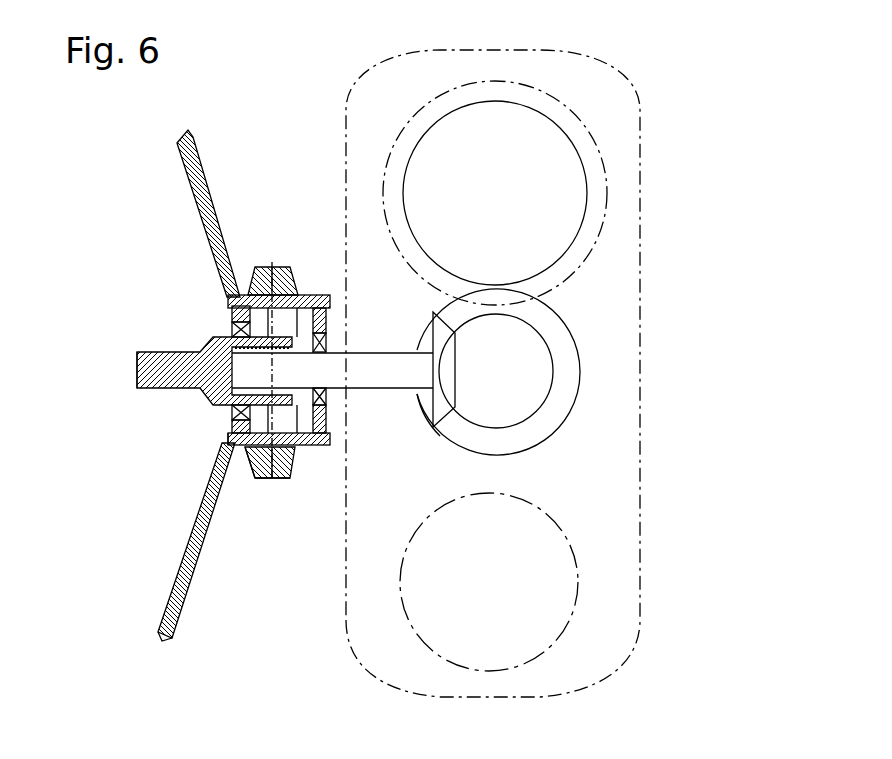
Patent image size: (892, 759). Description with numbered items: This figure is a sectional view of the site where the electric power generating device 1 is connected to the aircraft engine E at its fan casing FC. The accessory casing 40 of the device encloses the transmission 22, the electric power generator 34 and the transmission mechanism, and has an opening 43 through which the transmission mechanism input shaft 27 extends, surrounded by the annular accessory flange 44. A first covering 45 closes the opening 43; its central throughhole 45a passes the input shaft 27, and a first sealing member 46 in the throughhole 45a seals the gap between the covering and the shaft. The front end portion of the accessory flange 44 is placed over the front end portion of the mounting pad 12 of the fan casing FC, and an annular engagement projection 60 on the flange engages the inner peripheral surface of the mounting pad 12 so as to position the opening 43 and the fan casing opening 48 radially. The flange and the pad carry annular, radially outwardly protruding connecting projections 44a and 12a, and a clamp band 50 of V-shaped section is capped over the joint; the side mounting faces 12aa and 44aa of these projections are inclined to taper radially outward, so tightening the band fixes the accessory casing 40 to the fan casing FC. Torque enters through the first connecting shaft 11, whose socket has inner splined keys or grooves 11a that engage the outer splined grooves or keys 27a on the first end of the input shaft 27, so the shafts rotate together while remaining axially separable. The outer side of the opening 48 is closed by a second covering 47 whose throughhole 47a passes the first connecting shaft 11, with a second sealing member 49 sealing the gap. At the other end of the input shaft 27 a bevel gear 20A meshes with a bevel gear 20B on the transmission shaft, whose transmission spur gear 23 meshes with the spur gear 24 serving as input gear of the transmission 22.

The electric power generating device 1 is at (645, 322).
The first connecting shaft 11 is at (158, 350).
The inner peripheral splined keys or grooves 11a is at (300, 296).
The mounting pad 12 is at (222, 265).
The connecting projection 12a is at (273, 266).
The side mounting face 12aa is at (242, 291).
The bevel gear 20A is at (444, 418).
The bevel gear 20B is at (513, 408).
The transmission 22 is at (571, 110).
The transmission spur gear 23 is at (567, 371).
The spur gear 24 is at (587, 207).
The transmission mechanism input shaft 27 is at (386, 357).
The outer peripheral splined grooves or keys 27a is at (140, 380).
The electric power generator 34 is at (588, 572).
The accessory casing 40 is at (642, 190).
The opening 43 is at (232, 321).
The accessory flange 44 is at (290, 452).
The connecting projection 44a is at (277, 472).
The side mounting face 44aa is at (297, 470).
The first covering 45 is at (330, 315).
The throughhole 45a is at (328, 397).
The first sealing member 46 is at (328, 340).
The second covering 47 is at (220, 452).
The throughhole 47a is at (232, 434).
The opening 48 is at (332, 440).
The second sealing member 49 is at (233, 413).
The clamp band 50 is at (266, 472).
The engagement projection 60 is at (232, 303).
The aircraft engine E is at (200, 597).
The fan casing FC is at (170, 633).